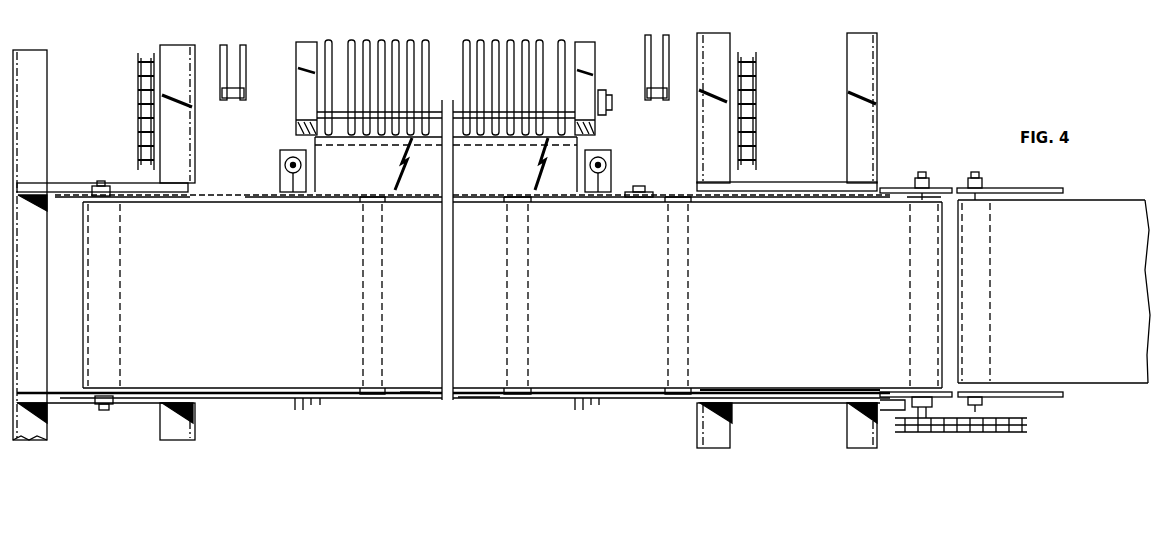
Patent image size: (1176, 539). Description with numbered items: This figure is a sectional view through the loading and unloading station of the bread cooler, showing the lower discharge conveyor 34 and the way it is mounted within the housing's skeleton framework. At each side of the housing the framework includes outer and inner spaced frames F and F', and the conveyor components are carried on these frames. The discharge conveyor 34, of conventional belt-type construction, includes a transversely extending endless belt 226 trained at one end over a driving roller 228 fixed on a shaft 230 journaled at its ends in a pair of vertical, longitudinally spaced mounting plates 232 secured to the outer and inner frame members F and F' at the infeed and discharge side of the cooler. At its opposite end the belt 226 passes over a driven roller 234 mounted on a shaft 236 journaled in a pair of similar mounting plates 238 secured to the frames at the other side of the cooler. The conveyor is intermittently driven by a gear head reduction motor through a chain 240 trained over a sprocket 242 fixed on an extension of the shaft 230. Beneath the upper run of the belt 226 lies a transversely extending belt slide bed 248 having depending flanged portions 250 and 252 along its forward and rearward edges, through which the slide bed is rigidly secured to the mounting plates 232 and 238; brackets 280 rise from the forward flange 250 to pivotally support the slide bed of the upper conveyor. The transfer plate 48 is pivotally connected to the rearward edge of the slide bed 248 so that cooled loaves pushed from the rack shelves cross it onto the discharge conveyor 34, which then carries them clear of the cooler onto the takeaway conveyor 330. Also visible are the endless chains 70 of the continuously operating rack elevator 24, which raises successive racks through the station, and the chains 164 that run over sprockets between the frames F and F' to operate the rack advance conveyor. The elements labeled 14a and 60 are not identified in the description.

The chains 164 is at (140, 62).
The outer frame F is at (459, 240).
The inner frame F' is at (459, 226).
The mounting plates 238 is at (122, 181).
The driven roller 234 is at (92, 186).
The shaft 236 is at (100, 404).
The discharge conveyor 34 is at (250, 198).
The rack elevator 24 is at (236, 100).
The grating section 14a is at (296, 107).
The endless chains 70 is at (246, 80).
The transfer plate 48 is at (580, 150).
The depending flanged portion 252 is at (640, 190).
The mounting plates 232 is at (784, 189).
The driving roller 228 is at (935, 189).
The takeaway conveyor 330 is at (1044, 188).
The frame 60 is at (1020, 1).
The brackets 280 is at (310, 406).
The belt slide bed 248 is at (418, 398).
The depending flanged portion 250 is at (485, 400).
The endless belt 226 is at (782, 386).
The shaft 230 is at (920, 408).
The chain 240 is at (960, 433).
The sprocket 242 is at (935, 413).